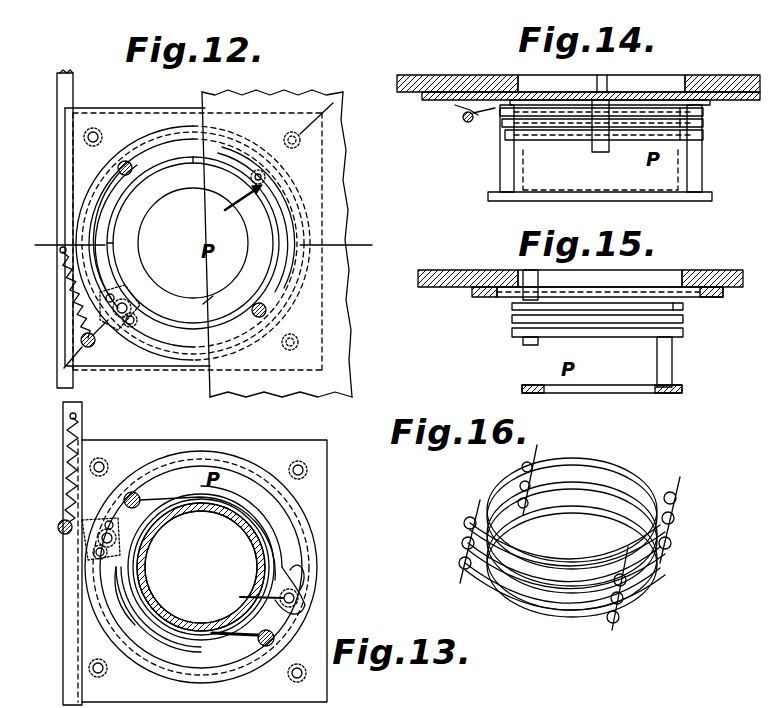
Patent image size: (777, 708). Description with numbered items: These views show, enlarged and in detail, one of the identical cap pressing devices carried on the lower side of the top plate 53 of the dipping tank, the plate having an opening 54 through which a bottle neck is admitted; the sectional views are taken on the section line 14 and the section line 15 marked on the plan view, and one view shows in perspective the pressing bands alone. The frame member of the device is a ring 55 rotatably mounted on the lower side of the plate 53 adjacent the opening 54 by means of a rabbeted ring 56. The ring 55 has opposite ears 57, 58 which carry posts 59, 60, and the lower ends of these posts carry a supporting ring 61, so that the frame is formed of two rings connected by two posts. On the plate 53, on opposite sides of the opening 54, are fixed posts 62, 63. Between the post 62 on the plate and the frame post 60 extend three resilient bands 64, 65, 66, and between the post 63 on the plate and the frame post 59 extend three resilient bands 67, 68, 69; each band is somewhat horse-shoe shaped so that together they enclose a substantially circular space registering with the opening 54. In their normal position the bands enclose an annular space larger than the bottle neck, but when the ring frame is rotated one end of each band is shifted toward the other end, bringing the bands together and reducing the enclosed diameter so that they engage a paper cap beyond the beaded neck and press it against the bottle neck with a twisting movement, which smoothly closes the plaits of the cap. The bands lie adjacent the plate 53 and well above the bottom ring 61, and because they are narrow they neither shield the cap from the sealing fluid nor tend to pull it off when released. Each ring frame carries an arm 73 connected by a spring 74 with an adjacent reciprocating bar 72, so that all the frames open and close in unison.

In FIG. 12, the section line 14— 14 is at (192, 237).
In FIG. 12, the section line 15— 15 is at (199, 245).
In FIG. 12, the top member or plate 53 is at (340, 192).
In FIG. 13, the top member or plate 53 is at (202, 571).
In FIG. 14, the top member or plate 53 is at (443, 82).
In FIG. 15, the top member or plate 53 is at (448, 287).
In FIG. 12, the opening 54 is at (248, 233).
In FIG. 14, the opening 54 is at (662, 86).
In FIG. 15, the opening 54 is at (672, 282).
In FIG. 12, the ring 55 is at (155, 134).
In FIG. 13, the ring 55 is at (262, 475).
In FIG. 14, the ring 55 is at (633, 97).
In FIG. 15, the ring 55 is at (695, 298).
In FIG. 12, the rabbeted ring 56 is at (185, 122).
In FIG. 13, the rabbeted ring 56 is at (257, 452).
In FIG. 14, the rabbeted ring 56 is at (428, 100).
In FIG. 15, the rabbeted ring 56 is at (478, 298).
In FIG. 12, the ear 57 is at (150, 300).
In FIG. 13, the ear 57 is at (120, 540).
In FIG. 12, the ear 58 is at (232, 203).
In FIG. 13, the ear 58 is at (248, 597).
In FIG. 12, the post 59 is at (266, 180).
In FIG. 13, the post 59 is at (292, 606).
In FIG. 14, the post 59 is at (702, 170).
In FIG. 15, the post 59 is at (672, 363).
In FIG. 16, the post 59 is at (678, 492).
In FIG. 12, the post 60 is at (120, 314).
In FIG. 13, the post 60 is at (100, 545).
In FIG. 16, the post 60 is at (482, 508).
In FIG. 12, the supporting ring 61 is at (212, 290).
In FIG. 14, the supporting ring 61 is at (619, 199).
In FIG. 15, the supporting ring 61 is at (640, 393).
In FIG. 12, the post 62 is at (118, 168).
In FIG. 13, the post 62 is at (140, 500).
In FIG. 15, the post 62 is at (532, 345).
In FIG. 16, the post 62 is at (541, 447).
In FIG. 12, the post 63 is at (267, 313).
In FIG. 13, the post 63 is at (262, 642).
In FIG. 14, the post 63 is at (600, 150).
In FIG. 16, the post 63 is at (614, 626).
In FIG. 12, the resilient band 64 is at (115, 236).
In FIG. 13, the resilient band 64 is at (170, 630).
In FIG. 14, the resilient band 64 is at (502, 112).
In FIG. 15, the resilient band 64 is at (516, 303).
In FIG. 16, the resilient band 64 is at (464, 522).
In FIG. 14, the resilient band 65 is at (505, 124).
In FIG. 15, the resilient band 65 is at (512, 319).
In FIG. 16, the resilient band 65 is at (462, 544).
In FIG. 14, the resilient band 66 is at (508, 138).
In FIG. 15, the resilient band 66 is at (512, 332).
In FIG. 16, the resilient band 66 is at (459, 565).
In FIG. 12, the resilient band 67 is at (256, 219).
In FIG. 13, the resilient band 67 is at (253, 528).
In FIG. 14, the resilient band 67 is at (704, 113).
In FIG. 15, the resilient band 67 is at (683, 318).
In FIG. 16, the resilient band 67 is at (676, 507).
In FIG. 14, the resilient band 68 is at (698, 125).
In FIG. 15, the resilient band 68 is at (610, 325).
In FIG. 16, the resilient band 68 is at (674, 528).
In FIG. 14, the resilient band 69 is at (696, 139).
In FIG. 15, the resilient band 69 is at (645, 340).
In FIG. 16, the resilient band 69 is at (671, 548).
In FIG. 12, the bar 72 is at (58, 210).
In FIG. 13, the bar 72 is at (67, 568).
In FIG. 12, the arm 73 is at (94, 344).
In FIG. 13, the arm 73 is at (60, 529).
In FIG. 14, the arm 73 is at (461, 114).
In FIG. 12, the spring 74 is at (62, 262).
In FIG. 13, the spring 74 is at (68, 470).
In FIG. 14, the spring 74 is at (470, 122).